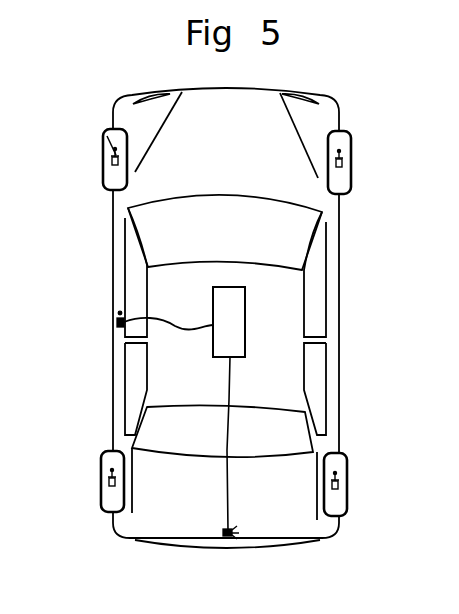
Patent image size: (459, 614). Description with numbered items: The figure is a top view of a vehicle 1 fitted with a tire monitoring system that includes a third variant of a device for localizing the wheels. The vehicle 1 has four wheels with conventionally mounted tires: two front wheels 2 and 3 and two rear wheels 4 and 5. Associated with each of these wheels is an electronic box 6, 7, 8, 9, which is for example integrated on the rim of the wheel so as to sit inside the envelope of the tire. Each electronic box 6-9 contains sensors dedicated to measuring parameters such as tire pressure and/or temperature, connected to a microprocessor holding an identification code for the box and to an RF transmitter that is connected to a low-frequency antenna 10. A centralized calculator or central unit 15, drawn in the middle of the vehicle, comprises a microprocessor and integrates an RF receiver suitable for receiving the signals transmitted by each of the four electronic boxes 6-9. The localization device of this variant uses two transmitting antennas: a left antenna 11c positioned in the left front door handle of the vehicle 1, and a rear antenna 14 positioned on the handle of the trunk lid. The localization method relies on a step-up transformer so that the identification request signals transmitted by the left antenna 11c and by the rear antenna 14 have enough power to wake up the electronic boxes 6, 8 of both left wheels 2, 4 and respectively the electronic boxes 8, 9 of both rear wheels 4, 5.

The vehicle 1 is at (312, 284).
The front wheel 2 is at (107, 195).
The front wheel 3 is at (348, 179).
The rear wheel 4 is at (108, 500).
The rear wheel 5 is at (348, 508).
The electronic box 6 is at (103, 165).
The electronic box 7 is at (351, 160).
The electronic box 8 is at (102, 473).
The electronic box 9 is at (350, 490).
The low-frequency antenna 10 is at (107, 128).
The left antenna 11c is at (113, 321).
The rear antenna 14 is at (226, 538).
The central unit 15 is at (238, 350).